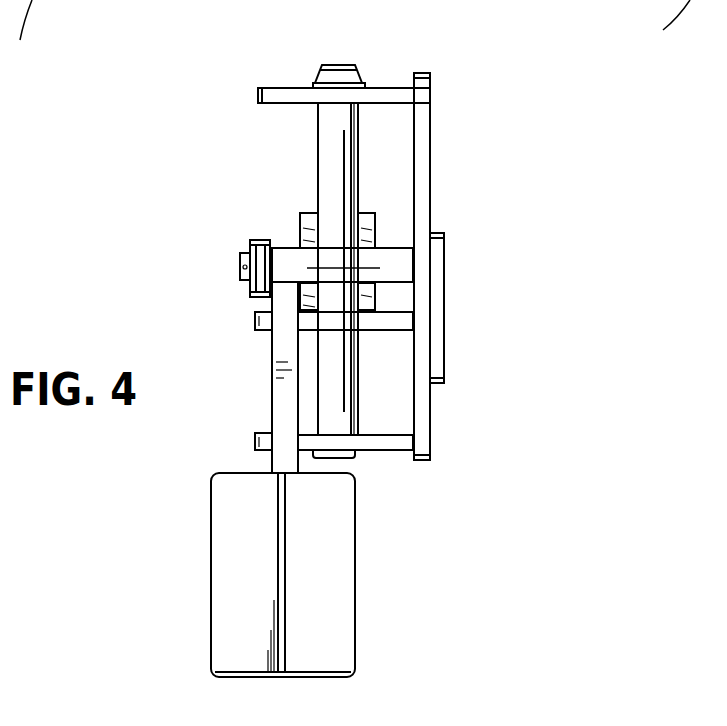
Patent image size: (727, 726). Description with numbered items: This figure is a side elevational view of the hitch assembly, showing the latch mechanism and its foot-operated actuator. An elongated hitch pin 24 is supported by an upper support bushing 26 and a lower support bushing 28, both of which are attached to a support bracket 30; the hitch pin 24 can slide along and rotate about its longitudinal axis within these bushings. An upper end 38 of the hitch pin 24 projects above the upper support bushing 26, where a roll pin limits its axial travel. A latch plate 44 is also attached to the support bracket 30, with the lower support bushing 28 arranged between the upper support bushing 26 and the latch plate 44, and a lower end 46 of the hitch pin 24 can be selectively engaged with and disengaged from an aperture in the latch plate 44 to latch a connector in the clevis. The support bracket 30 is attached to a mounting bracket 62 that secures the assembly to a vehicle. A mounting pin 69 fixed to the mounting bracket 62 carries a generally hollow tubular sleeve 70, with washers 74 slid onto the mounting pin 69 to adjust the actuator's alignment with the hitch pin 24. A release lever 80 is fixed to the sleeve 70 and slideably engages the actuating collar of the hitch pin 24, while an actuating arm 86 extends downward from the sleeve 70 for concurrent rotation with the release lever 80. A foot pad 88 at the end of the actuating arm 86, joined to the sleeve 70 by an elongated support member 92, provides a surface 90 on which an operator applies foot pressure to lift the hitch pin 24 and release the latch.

The hitch pin 24 is at (318, 149).
The upper support bushing 26 is at (400, 88).
The lower support bushing 28 is at (393, 330).
The support bracket 30 is at (431, 110).
The upper end 38 is at (338, 64).
The latch plate 44 is at (393, 450).
The lower end 46 is at (345, 458).
The mounting bracket 62 is at (444, 260).
The mounting pin 69 is at (240, 262).
The tubular sleeve 70 is at (393, 248).
The washers 74 is at (258, 242).
The release lever 80 is at (303, 212).
The actuating arm 86 is at (272, 355).
The foot pad 88 is at (355, 595).
The surface 90 is at (319, 591).
The support member 92 is at (272, 421).